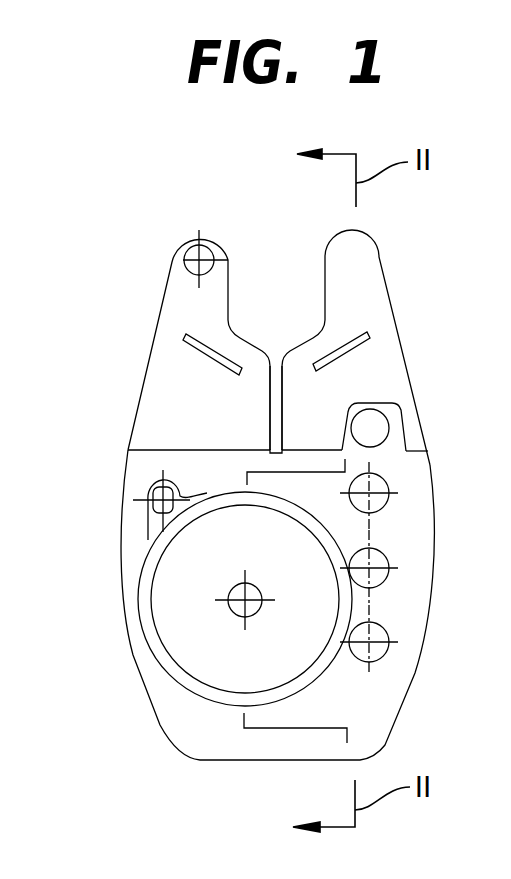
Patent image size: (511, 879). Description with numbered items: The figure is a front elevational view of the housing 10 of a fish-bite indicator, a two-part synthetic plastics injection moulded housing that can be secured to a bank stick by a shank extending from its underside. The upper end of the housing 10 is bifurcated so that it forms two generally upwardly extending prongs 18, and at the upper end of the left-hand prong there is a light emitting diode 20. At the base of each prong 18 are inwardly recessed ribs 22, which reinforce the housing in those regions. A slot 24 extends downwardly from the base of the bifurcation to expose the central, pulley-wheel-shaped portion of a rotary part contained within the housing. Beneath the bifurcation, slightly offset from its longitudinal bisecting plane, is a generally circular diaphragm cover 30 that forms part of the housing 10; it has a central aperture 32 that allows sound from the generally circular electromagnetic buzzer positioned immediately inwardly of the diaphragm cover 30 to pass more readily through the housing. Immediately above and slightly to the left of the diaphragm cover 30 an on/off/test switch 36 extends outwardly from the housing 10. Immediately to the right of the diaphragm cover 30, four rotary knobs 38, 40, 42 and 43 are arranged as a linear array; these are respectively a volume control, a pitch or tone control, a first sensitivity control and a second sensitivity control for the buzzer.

The housing 10 is at (415, 480).
The prongs 18 is at (170, 282).
The light emitting diode 20 is at (197, 245).
The inwardly recessed ribs 22 is at (193, 348).
The slot 24 is at (275, 412).
The diaphragm cover 30 is at (178, 633).
The central aperture 32 is at (237, 617).
The on/off/test switch 36 is at (152, 497).
The rotary knob 38 is at (378, 427).
The rotary knob 40 is at (380, 502).
The rotary knob 42 is at (377, 575).
The rotary knob 43 is at (378, 650).